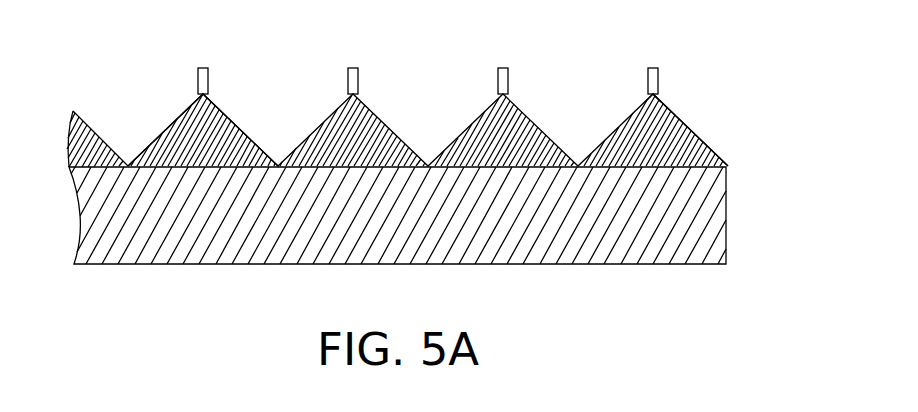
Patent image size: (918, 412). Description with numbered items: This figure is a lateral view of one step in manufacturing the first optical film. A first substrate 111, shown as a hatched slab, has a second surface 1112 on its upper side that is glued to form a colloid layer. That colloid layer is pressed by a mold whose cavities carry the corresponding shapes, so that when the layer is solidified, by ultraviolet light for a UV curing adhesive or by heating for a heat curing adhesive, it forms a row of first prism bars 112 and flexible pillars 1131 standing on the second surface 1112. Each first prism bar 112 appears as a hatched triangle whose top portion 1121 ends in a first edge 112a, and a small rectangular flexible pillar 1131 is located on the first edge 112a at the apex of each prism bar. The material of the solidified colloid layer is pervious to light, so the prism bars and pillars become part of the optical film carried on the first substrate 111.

The first substrate 111 is at (184, 228).
The first prism bar 112 is at (183, 141).
The first edge 112a is at (203, 92).
The flexible pillar 1131 is at (201, 80).
The top portion 1121 is at (650, 93).
The second surface 1112 is at (664, 166).